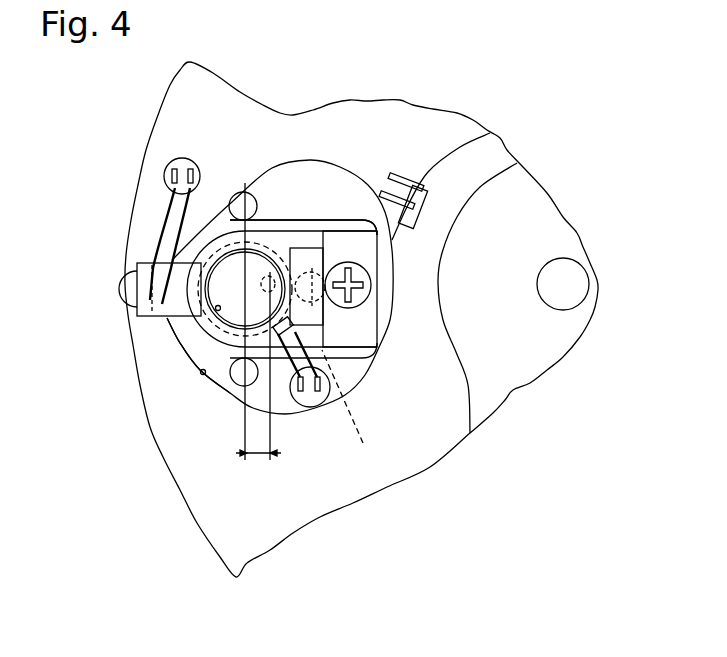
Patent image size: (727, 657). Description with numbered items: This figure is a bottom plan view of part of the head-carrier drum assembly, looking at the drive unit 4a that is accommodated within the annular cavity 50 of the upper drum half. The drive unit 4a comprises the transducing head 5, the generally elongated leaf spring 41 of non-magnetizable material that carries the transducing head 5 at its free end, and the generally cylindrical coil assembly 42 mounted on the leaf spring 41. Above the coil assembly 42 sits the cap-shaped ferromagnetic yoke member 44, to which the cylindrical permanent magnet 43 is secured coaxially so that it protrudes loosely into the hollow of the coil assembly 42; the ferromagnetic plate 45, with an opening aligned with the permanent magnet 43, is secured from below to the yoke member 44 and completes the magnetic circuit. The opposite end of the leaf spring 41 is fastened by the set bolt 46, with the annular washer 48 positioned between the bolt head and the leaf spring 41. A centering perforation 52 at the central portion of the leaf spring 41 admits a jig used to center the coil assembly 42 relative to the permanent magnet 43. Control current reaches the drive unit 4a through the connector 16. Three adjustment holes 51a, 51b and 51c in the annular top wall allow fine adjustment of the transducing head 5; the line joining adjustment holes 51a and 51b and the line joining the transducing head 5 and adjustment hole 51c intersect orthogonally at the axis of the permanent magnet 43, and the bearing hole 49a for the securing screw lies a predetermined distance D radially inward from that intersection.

The drive unit 4a is at (143, 318).
The transducing head 5 is at (118, 290).
The connector 16 is at (307, 407).
The leaf spring 41 is at (313, 230).
The coil assembly 42 is at (265, 244).
The permanent magnet 43 is at (217, 243).
The yoke member 44 is at (343, 229).
The ferromagnetic plate 45 is at (292, 248).
The set bolt 46 is at (365, 274).
The annular washer 48 is at (391, 335).
The bearing hole 49a is at (352, 410).
The annular cavity 50 is at (201, 373).
The adjustment hole 51a is at (233, 196).
The adjustment hole 51b is at (235, 380).
The adjustment hole 51c is at (380, 172).
The centering perforation 52 is at (216, 309).
The predetermined distance D is at (258, 466).